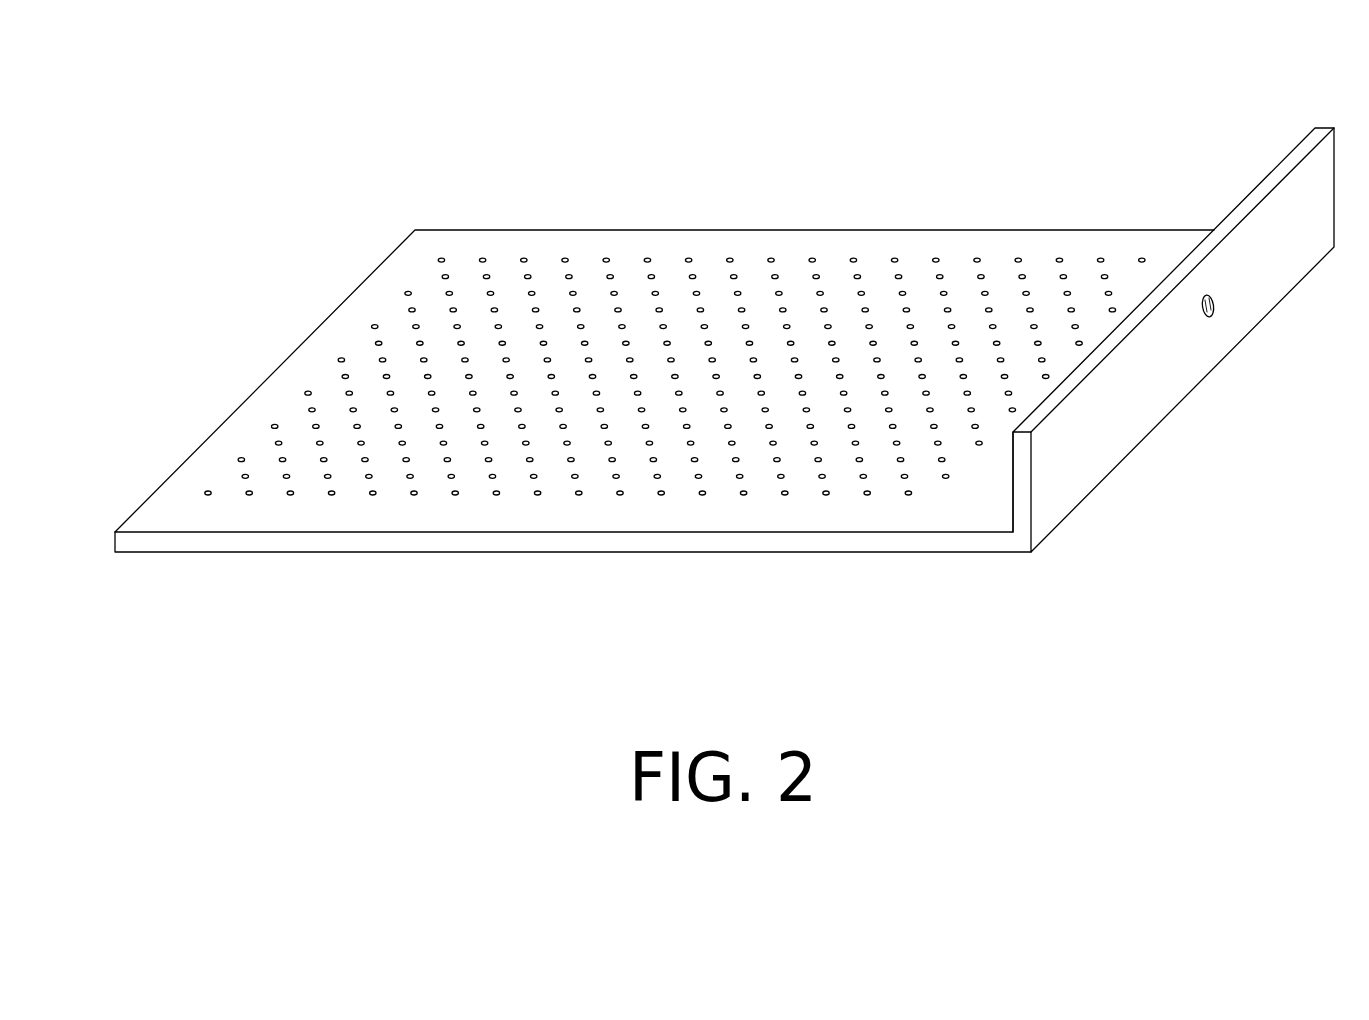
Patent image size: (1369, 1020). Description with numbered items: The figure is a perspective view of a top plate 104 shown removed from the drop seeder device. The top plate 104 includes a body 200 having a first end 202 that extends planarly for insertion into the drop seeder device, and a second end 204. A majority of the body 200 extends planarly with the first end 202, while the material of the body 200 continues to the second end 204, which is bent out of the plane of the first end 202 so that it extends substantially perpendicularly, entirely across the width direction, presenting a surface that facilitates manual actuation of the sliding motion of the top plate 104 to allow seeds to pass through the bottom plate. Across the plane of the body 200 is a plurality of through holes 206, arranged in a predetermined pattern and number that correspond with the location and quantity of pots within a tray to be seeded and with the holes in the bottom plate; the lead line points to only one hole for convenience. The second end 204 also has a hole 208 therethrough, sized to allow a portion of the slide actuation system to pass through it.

The top plate 104 is at (735, 374).
The body 200 is at (697, 520).
The first end 202 is at (417, 252).
The second end 204 is at (1184, 348).
The through holes 206 is at (908, 497).
The hole 208 is at (1211, 316).